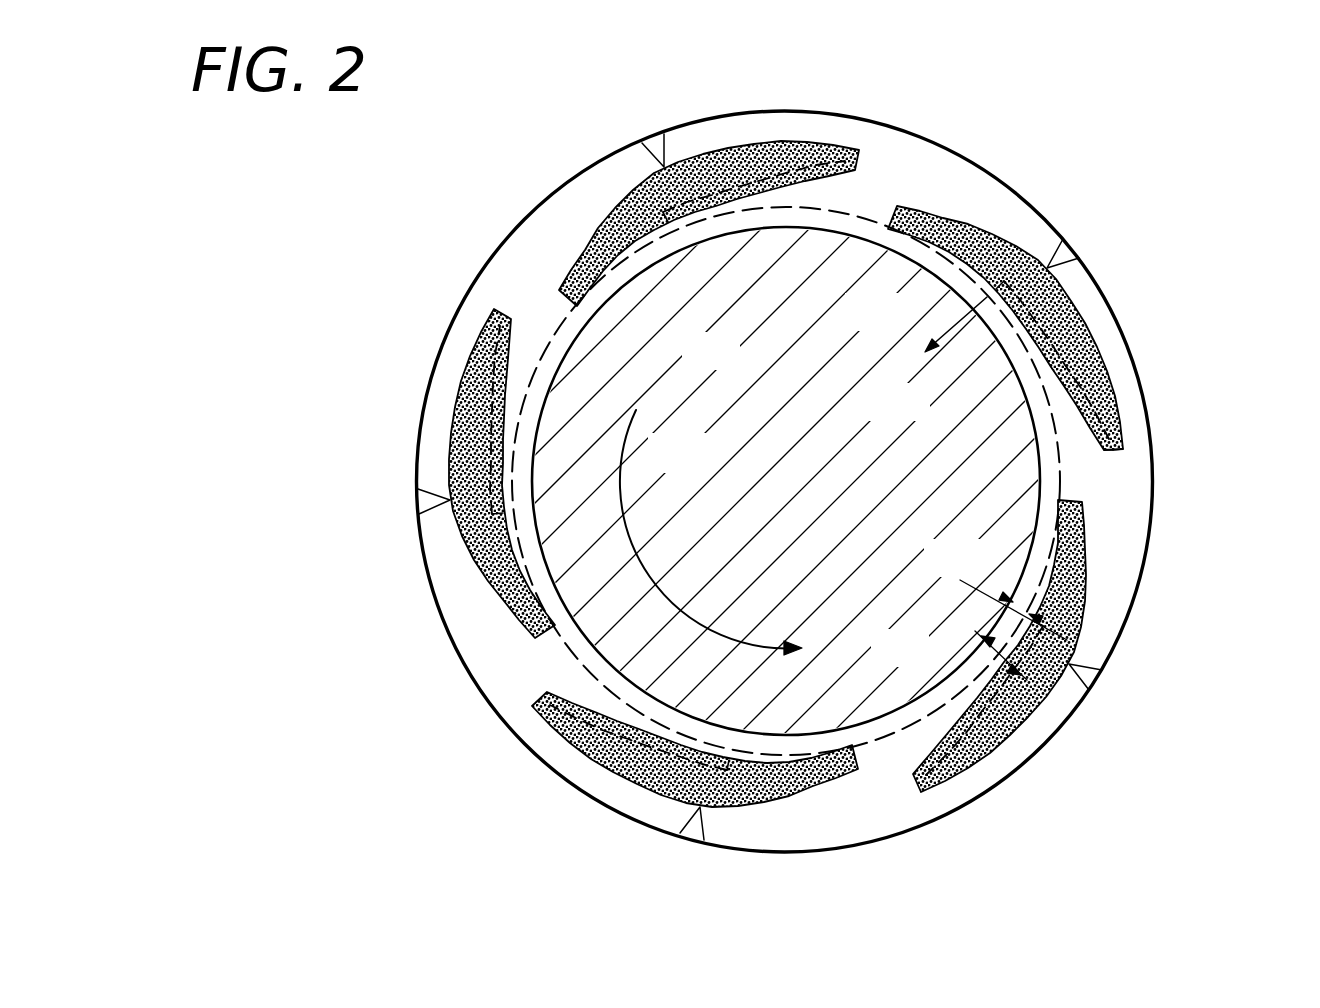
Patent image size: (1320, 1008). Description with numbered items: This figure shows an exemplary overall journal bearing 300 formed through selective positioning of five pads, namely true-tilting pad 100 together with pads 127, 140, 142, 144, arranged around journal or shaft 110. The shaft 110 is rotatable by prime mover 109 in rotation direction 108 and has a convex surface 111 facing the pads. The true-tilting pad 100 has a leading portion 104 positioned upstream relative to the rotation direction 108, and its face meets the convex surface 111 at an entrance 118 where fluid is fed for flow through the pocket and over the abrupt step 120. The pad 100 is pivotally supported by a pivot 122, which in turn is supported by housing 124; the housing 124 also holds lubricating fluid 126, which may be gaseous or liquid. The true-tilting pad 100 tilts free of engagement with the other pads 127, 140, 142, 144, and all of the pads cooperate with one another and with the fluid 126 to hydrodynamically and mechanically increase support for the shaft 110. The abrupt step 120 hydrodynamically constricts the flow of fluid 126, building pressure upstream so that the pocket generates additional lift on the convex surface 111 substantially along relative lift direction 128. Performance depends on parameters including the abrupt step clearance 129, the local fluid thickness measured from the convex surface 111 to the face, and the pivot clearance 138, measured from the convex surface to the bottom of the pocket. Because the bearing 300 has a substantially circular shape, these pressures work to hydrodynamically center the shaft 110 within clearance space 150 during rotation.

The true-tilting pad 100 is at (1105, 324).
The leading portion 104 is at (1117, 452).
The rotation direction 108 is at (630, 466).
The prime mover 109 is at (927, 420).
The shaft 110 is at (737, 370).
The convex surface 111 is at (868, 728).
The entrance 118 is at (1103, 452).
The abrupt step 120 is at (996, 286).
The pivot 122 is at (1048, 262).
The housing 124 is at (1274, 575).
The lubricating fluid 126 is at (542, 695).
The other pad 127 is at (601, 220).
The relative lift direction 128 is at (957, 321).
The abrupt step clearance 129 is at (1021, 602).
The pivot clearance 138 is at (988, 668).
The pad 140 is at (448, 472).
The pad 142 is at (646, 796).
The pad 144 is at (1053, 702).
The clearance space 150 is at (561, 330).
The overall journal bearing 300 is at (481, 827).